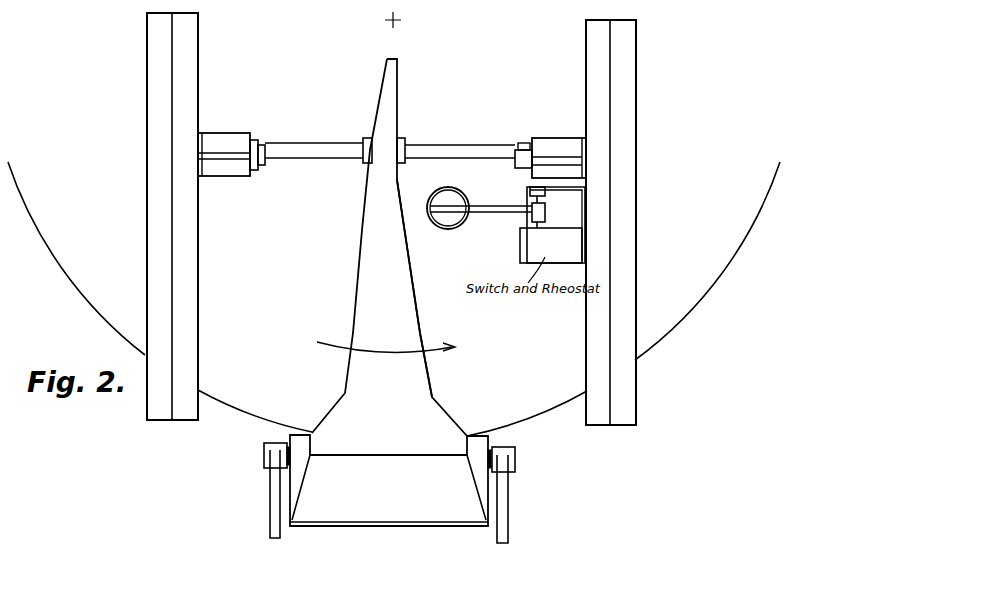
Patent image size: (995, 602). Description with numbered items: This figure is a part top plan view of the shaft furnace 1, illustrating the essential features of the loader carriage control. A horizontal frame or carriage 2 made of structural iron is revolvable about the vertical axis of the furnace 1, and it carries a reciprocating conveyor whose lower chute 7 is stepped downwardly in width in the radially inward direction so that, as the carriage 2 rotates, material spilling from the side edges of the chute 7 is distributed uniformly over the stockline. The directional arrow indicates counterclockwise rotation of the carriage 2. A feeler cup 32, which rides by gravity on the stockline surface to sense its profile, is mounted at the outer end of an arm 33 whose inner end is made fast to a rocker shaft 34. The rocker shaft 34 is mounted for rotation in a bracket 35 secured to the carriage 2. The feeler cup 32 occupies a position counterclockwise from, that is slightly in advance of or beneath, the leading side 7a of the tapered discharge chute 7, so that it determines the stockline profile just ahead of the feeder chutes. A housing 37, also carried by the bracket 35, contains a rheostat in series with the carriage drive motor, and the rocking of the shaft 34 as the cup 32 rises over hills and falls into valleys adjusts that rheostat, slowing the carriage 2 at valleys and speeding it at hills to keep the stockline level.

The shaft furnace 1 is at (57, 265).
The carriage 2 is at (147, 278).
The lower chute 7 is at (365, 268).
The leading side 7a is at (420, 303).
The feeler cup 32 is at (450, 233).
The arm 33 is at (510, 195).
The rocker shaft 34 is at (546, 197).
The bracket 35 is at (530, 221).
The housing 37 is at (526, 250).